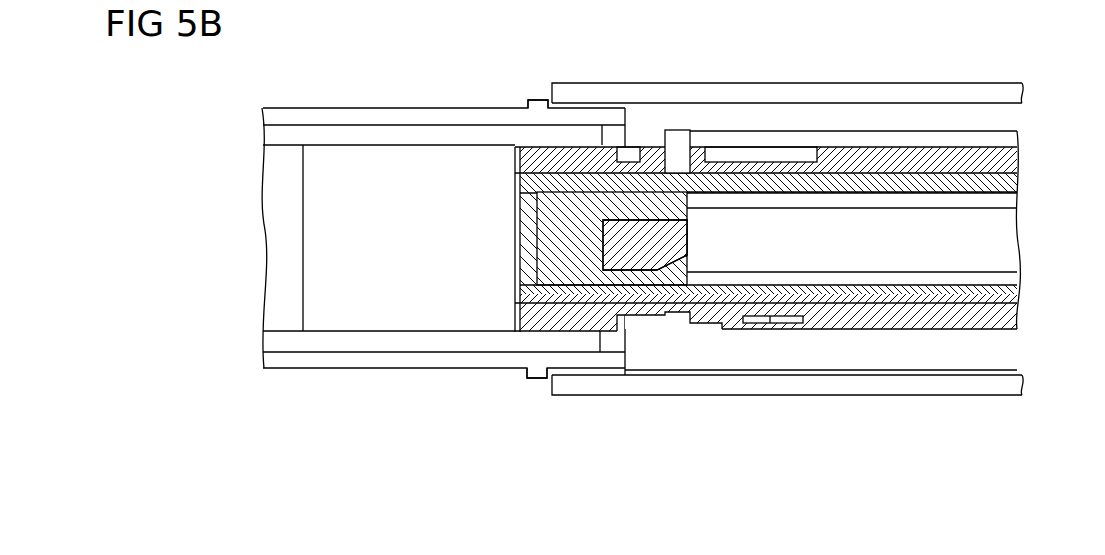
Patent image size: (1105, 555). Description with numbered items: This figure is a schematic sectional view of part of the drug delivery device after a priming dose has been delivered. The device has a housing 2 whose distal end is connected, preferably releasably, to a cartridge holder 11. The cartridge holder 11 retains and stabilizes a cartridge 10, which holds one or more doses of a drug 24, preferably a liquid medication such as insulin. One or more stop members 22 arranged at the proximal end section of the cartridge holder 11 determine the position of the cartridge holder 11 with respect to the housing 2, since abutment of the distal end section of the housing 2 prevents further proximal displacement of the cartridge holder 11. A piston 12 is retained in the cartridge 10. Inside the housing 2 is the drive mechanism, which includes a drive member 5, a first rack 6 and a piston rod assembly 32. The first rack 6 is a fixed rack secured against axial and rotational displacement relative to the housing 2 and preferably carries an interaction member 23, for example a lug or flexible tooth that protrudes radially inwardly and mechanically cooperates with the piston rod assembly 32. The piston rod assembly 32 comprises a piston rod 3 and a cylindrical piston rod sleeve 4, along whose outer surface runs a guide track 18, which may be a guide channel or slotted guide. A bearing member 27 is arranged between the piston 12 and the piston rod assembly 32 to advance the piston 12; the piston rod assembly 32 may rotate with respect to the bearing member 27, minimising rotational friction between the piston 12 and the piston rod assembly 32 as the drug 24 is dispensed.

The housing 2 is at (928, 385).
The piston rod 3 is at (942, 288).
The piston rod sleeve 4 is at (728, 322).
The drive member 5 is at (852, 278).
The first rack 6 is at (913, 140).
The cartridge 10 is at (283, 310).
The cartridge holder 11 is at (342, 107).
The piston 12 is at (317, 202).
The guide track 18 is at (630, 147).
The stop member 22 is at (537, 100).
The interaction member 23 is at (688, 130).
The drug 24 is at (278, 253).
The bearing member 27 is at (515, 247).
The piston rod assembly 32 is at (1013, 183).